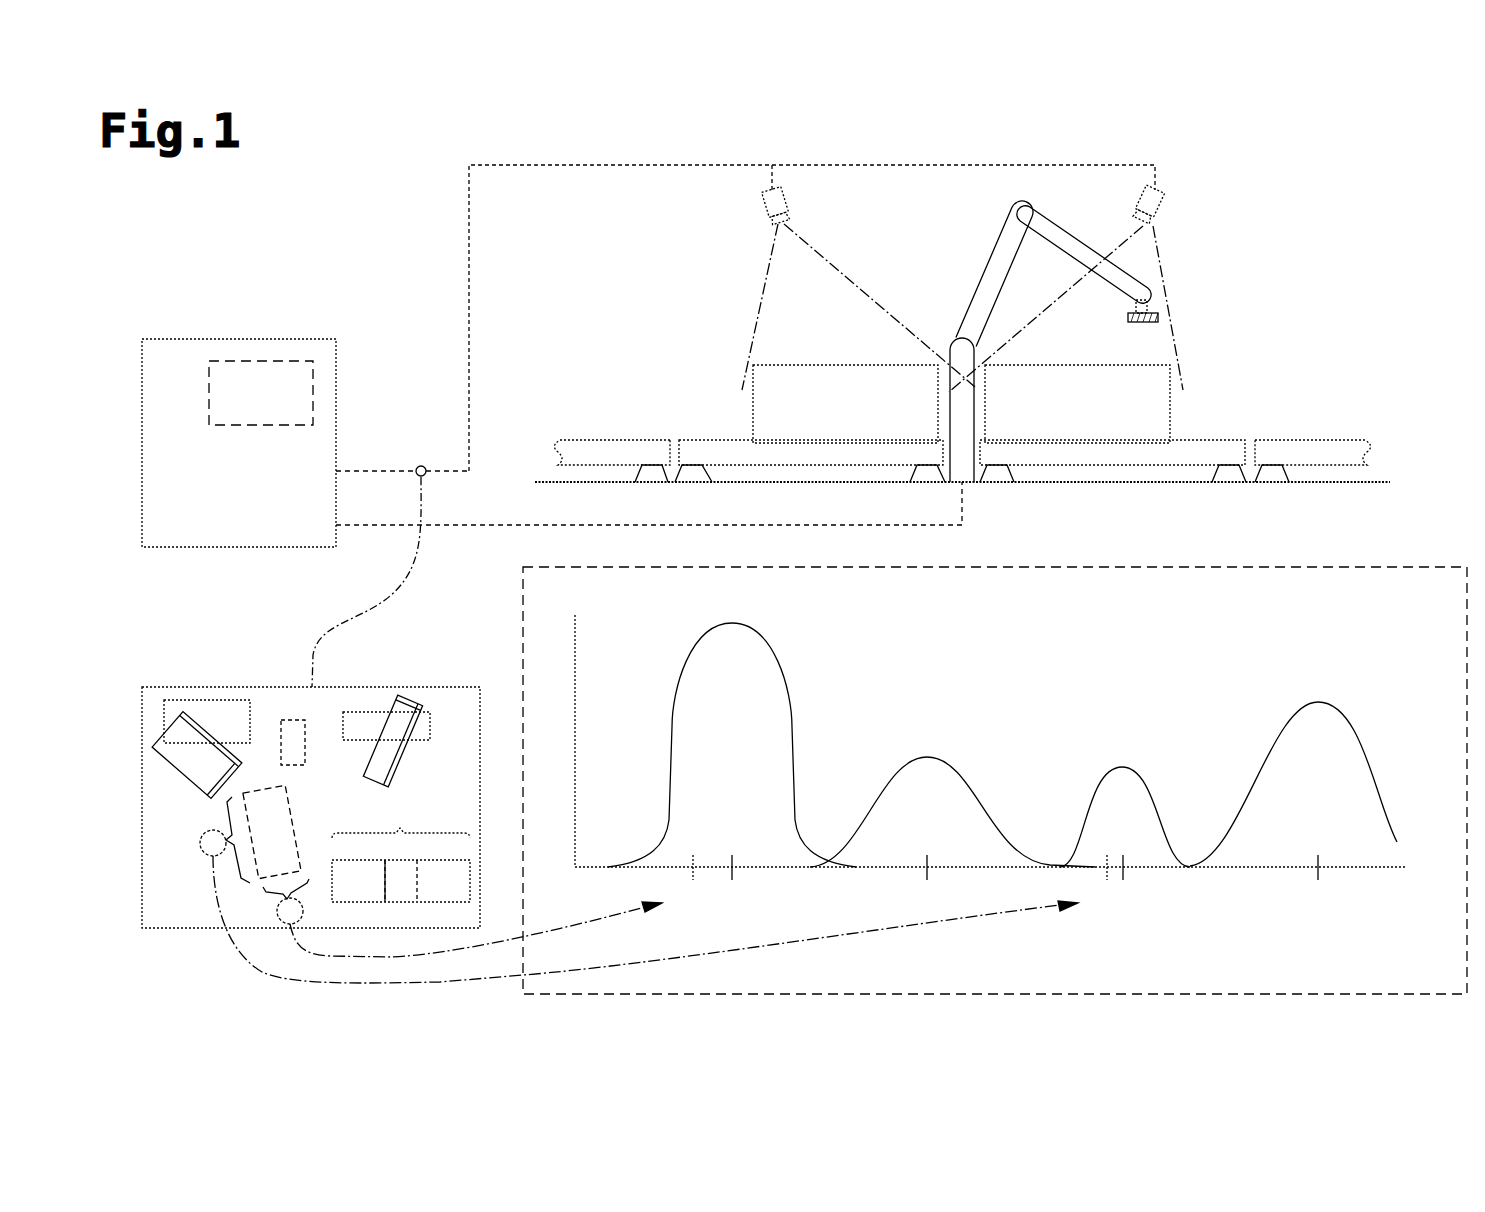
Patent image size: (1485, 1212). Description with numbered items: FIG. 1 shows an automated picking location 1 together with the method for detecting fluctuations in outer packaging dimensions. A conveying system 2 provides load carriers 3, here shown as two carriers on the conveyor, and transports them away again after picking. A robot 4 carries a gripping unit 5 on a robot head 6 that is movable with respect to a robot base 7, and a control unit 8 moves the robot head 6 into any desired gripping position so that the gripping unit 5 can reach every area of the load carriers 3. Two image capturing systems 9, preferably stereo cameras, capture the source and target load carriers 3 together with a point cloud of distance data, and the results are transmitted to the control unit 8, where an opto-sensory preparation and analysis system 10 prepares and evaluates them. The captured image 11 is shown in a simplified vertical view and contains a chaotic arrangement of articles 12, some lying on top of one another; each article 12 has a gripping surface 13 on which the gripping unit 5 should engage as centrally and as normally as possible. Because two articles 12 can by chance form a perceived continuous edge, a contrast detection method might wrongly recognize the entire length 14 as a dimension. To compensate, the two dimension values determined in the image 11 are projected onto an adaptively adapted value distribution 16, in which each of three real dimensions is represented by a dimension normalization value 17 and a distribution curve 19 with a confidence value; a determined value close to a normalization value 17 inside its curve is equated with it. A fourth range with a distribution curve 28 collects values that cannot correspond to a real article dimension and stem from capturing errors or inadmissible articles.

The automated picking location 1 is at (1390, 164).
The conveying system 2 is at (700, 452).
The load carrier 3 is at (837, 420).
The robot 4 is at (987, 278).
The gripping unit 5 is at (1160, 318).
The robot head 6 is at (1148, 303).
The robot base 7 is at (965, 472).
The control unit 8 is at (175, 339).
The image capturing system 9 is at (764, 204).
The opto-sensory preparation and analysis system 10 is at (262, 361).
The captured image 11 is at (178, 906).
The article 12 is at (160, 733).
The gripping surface 13 is at (188, 743).
The entire length 14 is at (401, 850).
The value distribution 16 is at (1020, 611).
The dimension normalization value 17 is at (732, 858).
The distribution curve 19 is at (782, 672).
The distribution curve of fourth range 28 is at (1370, 793).